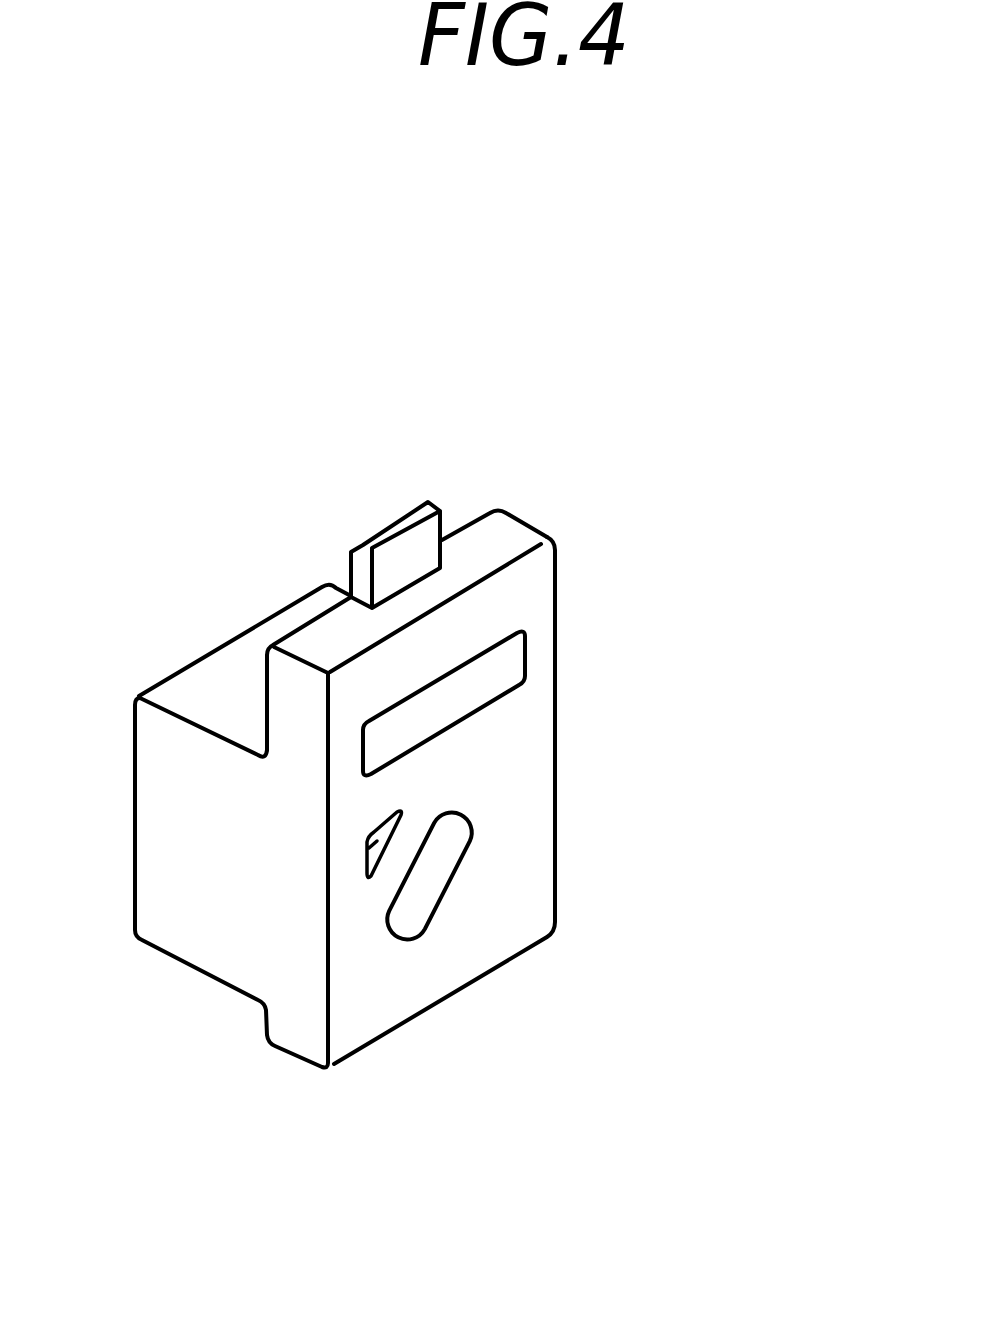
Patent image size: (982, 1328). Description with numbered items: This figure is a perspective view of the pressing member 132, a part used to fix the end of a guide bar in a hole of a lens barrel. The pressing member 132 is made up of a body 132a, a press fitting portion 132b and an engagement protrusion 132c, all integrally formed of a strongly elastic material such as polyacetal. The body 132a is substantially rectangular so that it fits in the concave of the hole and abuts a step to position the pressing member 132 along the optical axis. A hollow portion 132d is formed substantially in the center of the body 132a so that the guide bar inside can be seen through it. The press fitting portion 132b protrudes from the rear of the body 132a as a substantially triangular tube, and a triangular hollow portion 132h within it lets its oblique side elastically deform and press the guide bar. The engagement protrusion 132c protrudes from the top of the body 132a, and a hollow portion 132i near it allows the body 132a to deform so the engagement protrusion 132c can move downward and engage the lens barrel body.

The pressing member 132 is at (454, 737).
The body 132a is at (464, 1077).
The press fitting portion 132b is at (77, 1073).
The engagement protrusion 132c is at (254, 373).
The hollow portion 132d is at (442, 861).
The triangular hollow portion 132h is at (452, 1220).
The hollow portion 132i is at (507, 672).